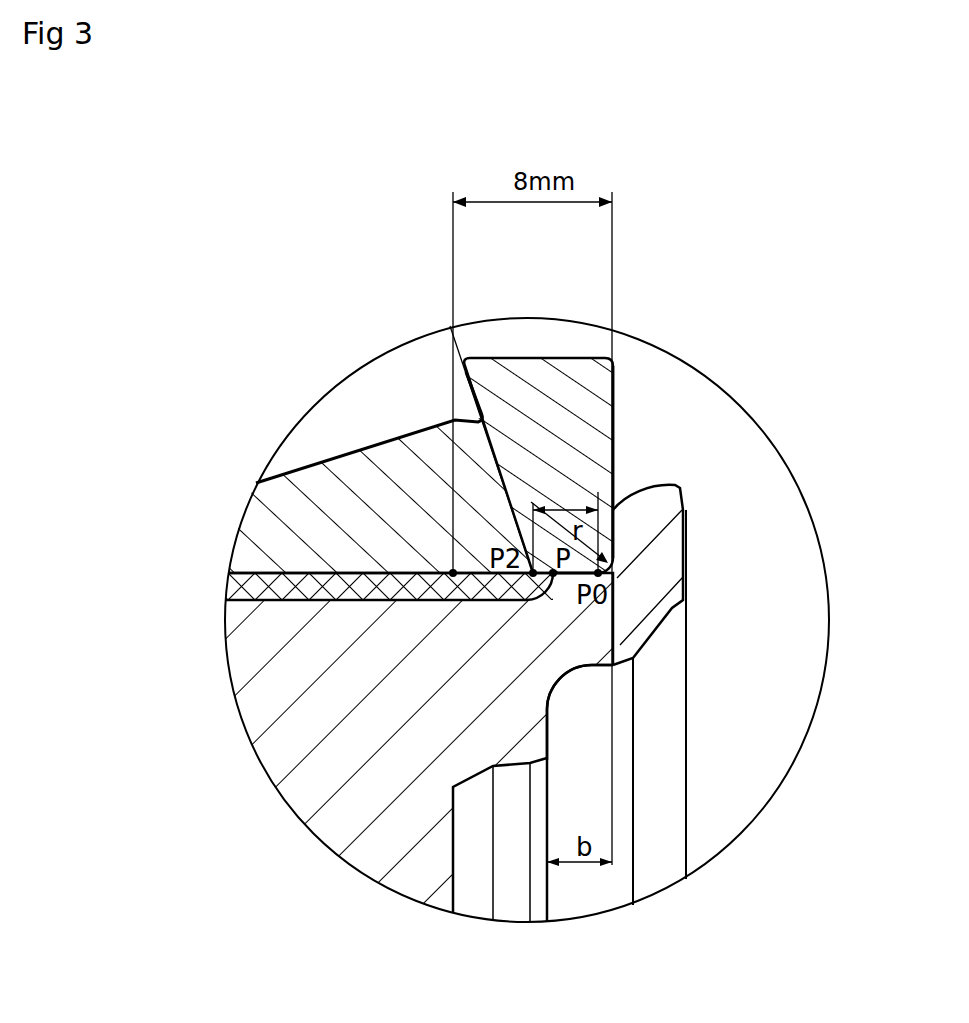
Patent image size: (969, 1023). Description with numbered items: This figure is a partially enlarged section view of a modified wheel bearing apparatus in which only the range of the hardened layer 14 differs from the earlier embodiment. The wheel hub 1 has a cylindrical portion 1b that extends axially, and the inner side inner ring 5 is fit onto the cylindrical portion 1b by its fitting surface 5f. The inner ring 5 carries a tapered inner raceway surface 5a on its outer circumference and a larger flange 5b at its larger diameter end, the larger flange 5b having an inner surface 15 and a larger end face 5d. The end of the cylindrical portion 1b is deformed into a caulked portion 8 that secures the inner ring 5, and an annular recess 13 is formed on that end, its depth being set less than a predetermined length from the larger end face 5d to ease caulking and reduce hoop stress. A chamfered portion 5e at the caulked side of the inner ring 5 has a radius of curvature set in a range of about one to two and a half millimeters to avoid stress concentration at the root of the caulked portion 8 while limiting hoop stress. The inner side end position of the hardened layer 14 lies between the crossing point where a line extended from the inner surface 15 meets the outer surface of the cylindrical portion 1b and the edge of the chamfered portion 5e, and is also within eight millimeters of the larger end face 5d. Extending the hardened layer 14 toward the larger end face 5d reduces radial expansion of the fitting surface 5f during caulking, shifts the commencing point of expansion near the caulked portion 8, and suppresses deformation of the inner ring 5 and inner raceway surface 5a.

The wheel hub 1 is at (250, 660).
The cylindrical portion 1b is at (437, 567).
The inner ring 5 is at (615, 486).
The inner raceway surface 5a is at (353, 463).
The larger flange 5b is at (567, 385).
The larger end face 5d is at (615, 410).
The chamfered portion 5e is at (612, 565).
The fitting surface 5f is at (352, 570).
The caulked portion 8 is at (650, 552).
The annular recess 13 is at (577, 685).
The hardened layer 14 is at (305, 595).
The inner surface 15 is at (462, 373).